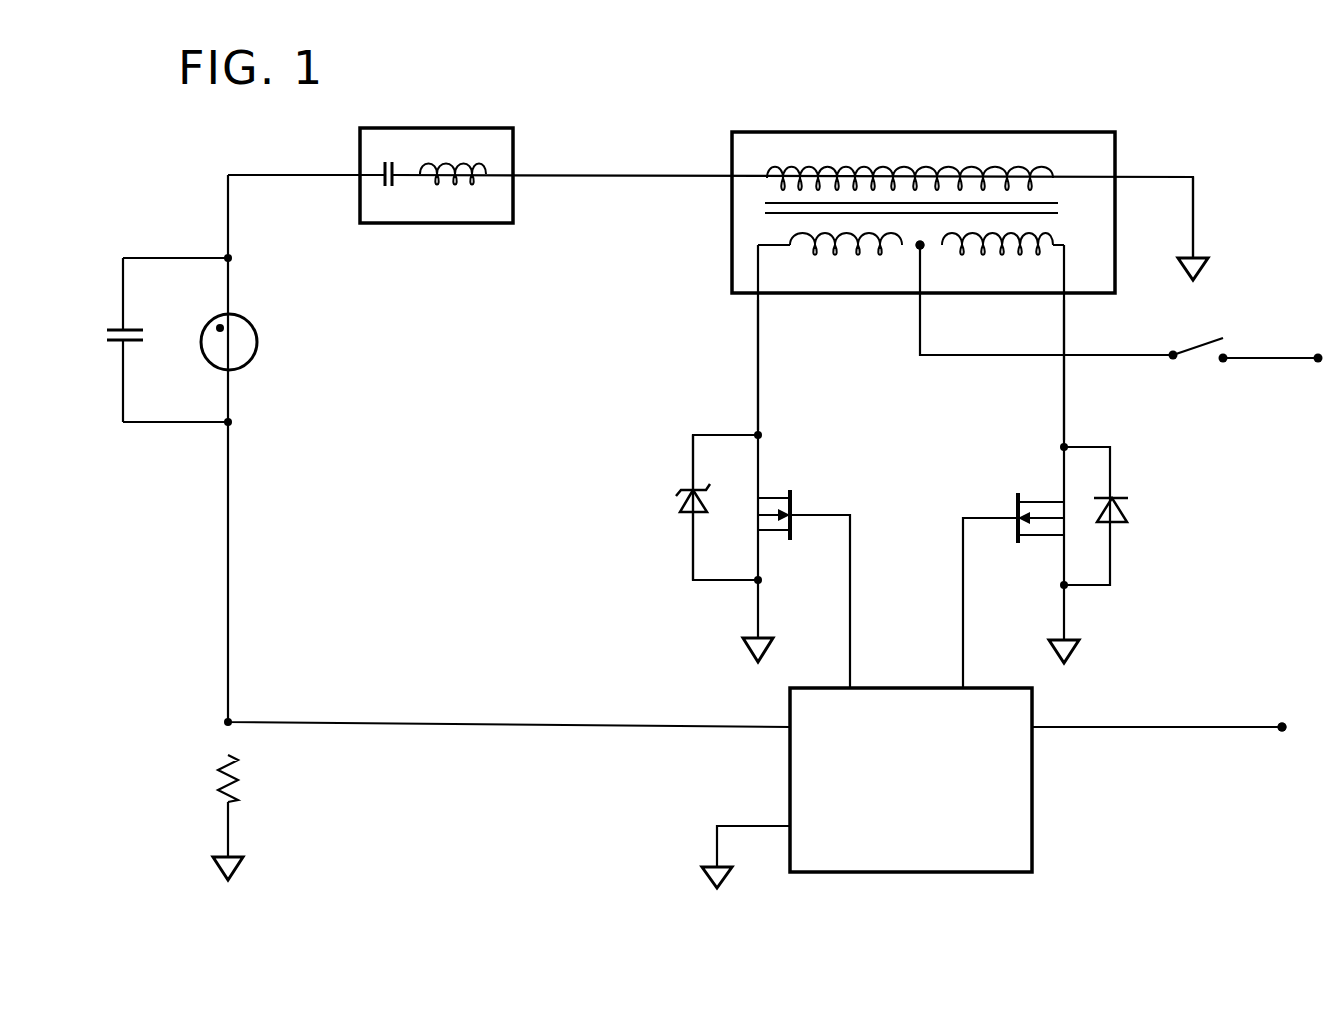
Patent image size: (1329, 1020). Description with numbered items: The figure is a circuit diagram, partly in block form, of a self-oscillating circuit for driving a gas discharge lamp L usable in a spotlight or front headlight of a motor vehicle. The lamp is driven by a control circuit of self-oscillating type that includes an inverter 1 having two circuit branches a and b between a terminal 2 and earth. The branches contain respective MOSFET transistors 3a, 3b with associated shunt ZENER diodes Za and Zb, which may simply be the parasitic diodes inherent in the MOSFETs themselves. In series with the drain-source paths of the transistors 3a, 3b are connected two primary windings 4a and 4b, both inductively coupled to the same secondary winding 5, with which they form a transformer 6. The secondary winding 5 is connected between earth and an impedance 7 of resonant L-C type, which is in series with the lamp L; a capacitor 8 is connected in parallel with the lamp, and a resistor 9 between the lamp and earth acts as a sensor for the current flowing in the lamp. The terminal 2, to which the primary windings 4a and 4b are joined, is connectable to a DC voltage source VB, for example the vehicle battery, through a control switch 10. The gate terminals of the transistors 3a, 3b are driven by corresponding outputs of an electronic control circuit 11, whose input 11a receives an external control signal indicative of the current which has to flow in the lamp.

The inverter 1 is at (1194, 166).
The terminal 2 is at (917, 252).
The MOSFET transistor 3a is at (792, 496).
The MOSFET transistor 3b is at (1012, 500).
The primary winding 4a is at (835, 252).
The primary winding 4b is at (1000, 255).
The secondary winding 5 is at (882, 168).
The transformer 6 is at (1027, 148).
The impedance 7 is at (485, 150).
The capacitor 8 is at (113, 328).
The resistor 9 is at (210, 784).
The control switch 10 is at (1207, 350).
The electronic control circuit 11 is at (1018, 760).
The input 11a is at (1282, 724).
The gas discharge lamp L is at (242, 333).
The circuit branch a is at (757, 358).
The circuit branch b is at (1064, 395).
The ZENER diode Za is at (682, 492).
The ZENER diode Zb is at (1128, 500).
The DC voltage source VB is at (1318, 356).